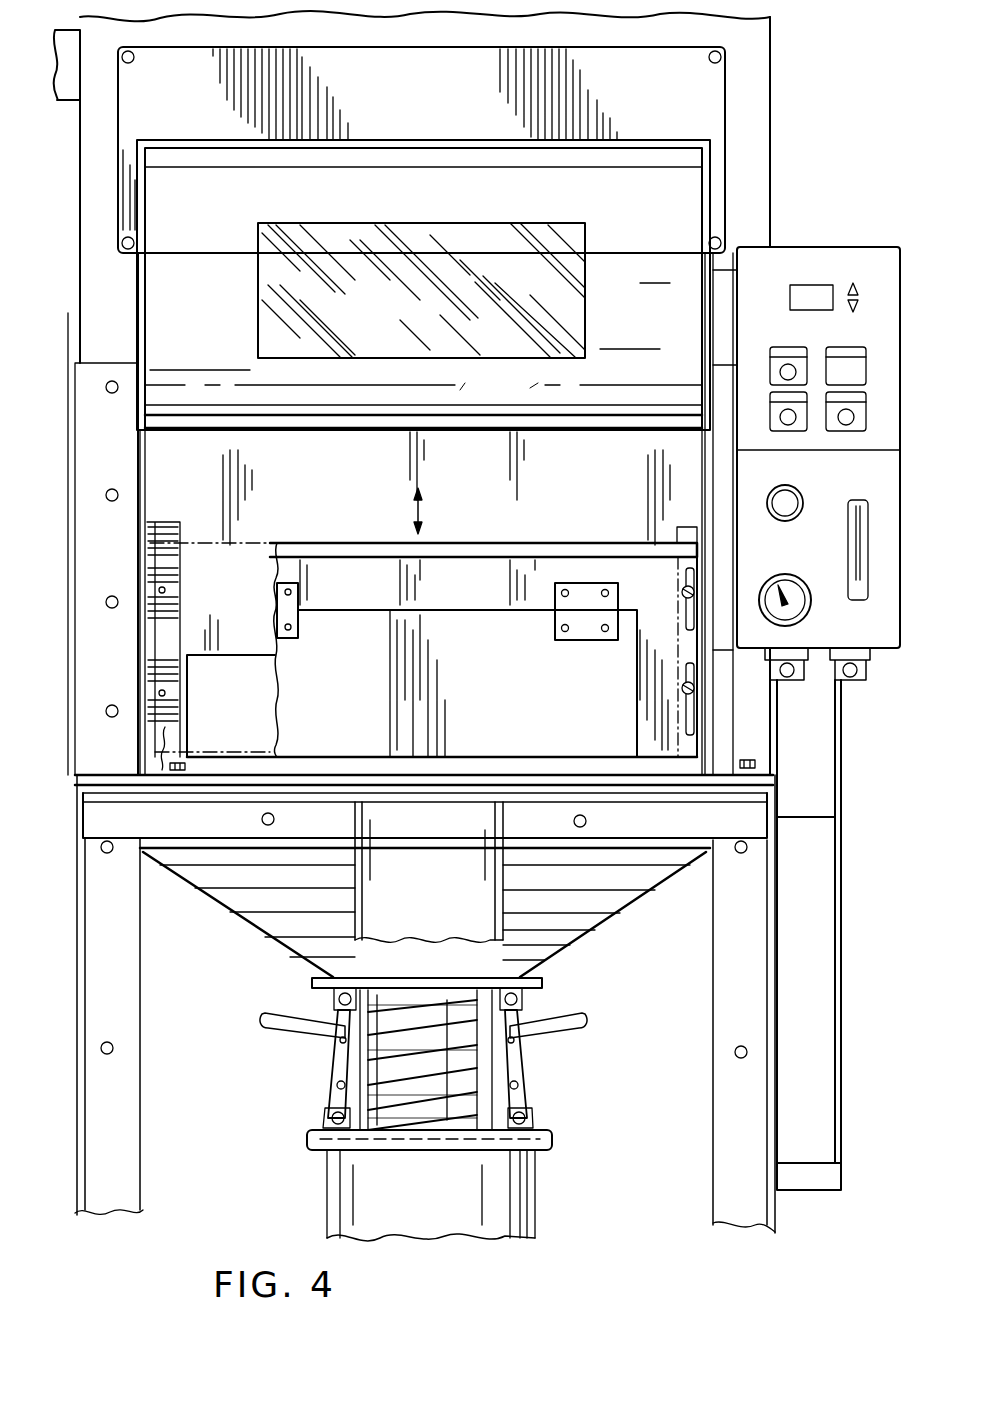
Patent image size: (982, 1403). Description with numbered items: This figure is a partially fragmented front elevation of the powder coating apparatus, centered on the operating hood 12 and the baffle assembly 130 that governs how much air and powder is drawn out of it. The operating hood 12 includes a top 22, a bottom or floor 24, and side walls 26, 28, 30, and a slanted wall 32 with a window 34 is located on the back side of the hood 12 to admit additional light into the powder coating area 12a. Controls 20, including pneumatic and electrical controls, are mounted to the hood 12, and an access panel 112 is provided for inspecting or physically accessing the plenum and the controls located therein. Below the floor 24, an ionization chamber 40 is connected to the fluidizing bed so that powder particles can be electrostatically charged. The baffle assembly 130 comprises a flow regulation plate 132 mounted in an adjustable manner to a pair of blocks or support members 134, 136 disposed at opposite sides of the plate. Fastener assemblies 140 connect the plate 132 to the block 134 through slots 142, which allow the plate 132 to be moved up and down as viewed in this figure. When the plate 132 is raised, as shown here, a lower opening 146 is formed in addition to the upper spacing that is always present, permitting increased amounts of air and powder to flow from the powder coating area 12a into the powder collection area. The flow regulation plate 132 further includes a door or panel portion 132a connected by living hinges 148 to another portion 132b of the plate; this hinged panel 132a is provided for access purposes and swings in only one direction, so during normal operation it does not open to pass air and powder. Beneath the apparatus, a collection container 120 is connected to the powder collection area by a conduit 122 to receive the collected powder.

The operating hood 12 is at (394, 138).
The access panel 112 is at (616, 46).
The top 22 is at (433, 168).
The side wall 26 is at (150, 335).
The side wall 28 is at (702, 322).
The powder coating area 12a is at (499, 387).
The slanted wall 32 is at (268, 188).
The window 34 is at (439, 292).
The controls 20 is at (810, 240).
The support member 134 is at (170, 518).
The side wall 30 is at (357, 450).
The baffle assembly 130 is at (583, 528).
The flow regulation plate 132 is at (353, 538).
The door or panel portion 132a is at (499, 639).
The plate portion 132b is at (494, 584).
The support member 136 is at (690, 527).
The fastener assembly 140 is at (682, 688).
The slot 142 is at (690, 578).
The living hinge 148 is at (300, 637).
The lower opening 146 is at (474, 764).
The floor 24 is at (310, 772).
The ionization chamber 40 is at (434, 901).
The conduit 122 is at (470, 1073).
The collection container 120 is at (429, 1220).